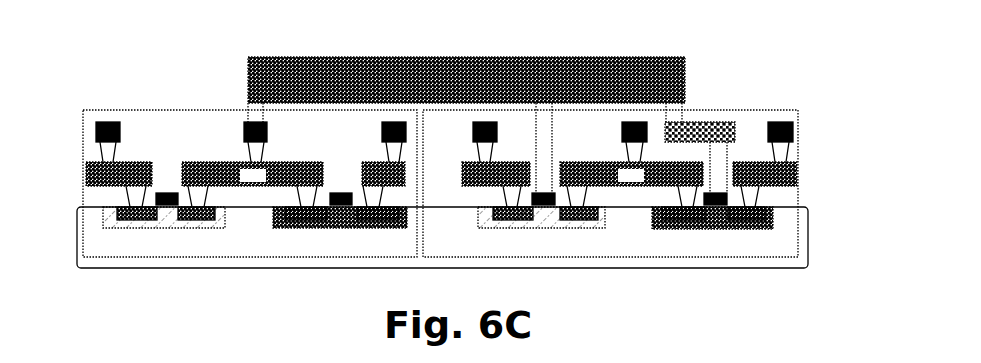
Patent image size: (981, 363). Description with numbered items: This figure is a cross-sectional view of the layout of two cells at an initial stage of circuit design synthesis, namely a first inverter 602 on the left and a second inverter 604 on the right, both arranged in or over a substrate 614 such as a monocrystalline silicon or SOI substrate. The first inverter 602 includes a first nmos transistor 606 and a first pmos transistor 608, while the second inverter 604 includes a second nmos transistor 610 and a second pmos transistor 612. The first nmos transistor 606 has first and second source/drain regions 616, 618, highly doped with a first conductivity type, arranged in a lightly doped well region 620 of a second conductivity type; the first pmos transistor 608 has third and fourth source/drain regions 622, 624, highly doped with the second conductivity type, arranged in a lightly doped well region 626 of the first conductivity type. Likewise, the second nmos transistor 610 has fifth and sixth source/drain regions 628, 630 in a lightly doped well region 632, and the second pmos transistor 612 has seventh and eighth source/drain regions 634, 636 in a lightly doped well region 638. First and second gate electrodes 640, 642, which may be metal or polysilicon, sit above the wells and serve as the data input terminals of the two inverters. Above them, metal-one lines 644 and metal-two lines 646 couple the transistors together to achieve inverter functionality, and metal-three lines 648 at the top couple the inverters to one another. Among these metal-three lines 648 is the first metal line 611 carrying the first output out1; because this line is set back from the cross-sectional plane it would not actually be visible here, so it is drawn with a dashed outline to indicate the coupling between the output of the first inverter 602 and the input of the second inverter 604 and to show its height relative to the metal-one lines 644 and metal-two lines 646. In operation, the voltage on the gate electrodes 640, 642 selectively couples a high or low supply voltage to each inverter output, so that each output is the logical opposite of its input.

The first inverter 602 is at (189, 109).
The second inverter 604 is at (729, 109).
The first nmos transistor 606 is at (340, 165).
The first pmos transistor 608 is at (170, 165).
The second nmos transistor 610 is at (711, 161).
The first metal line 611 is at (474, 57).
The second pmos transistor 612 is at (546, 161).
The substrate 614 is at (810, 270).
The first source/drain region 616 is at (307, 229).
The second source/drain region 618 is at (368, 229).
The lightly doped well region 620 is at (347, 229).
The third source/drain region 622 is at (135, 229).
The fourth source/drain region 624 is at (198, 229).
The lightly doped well region 626 is at (177, 229).
The fifth source/drain region 628 is at (680, 229).
The sixth source/drain region 630 is at (742, 229).
The lightly doped well region 632 is at (728, 229).
The seventh source/drain region 634 is at (508, 229).
The eighth source/drain region 636 is at (568, 229).
The lightly doped well region 638 is at (552, 229).
The first gate electrode 640 is at (156, 197).
The second gate electrode 642 is at (532, 197).
The metal1 lines 644 is at (805, 162).
The metal2 lines 646 is at (805, 120).
The metal 3 lines 648 is at (805, 60).